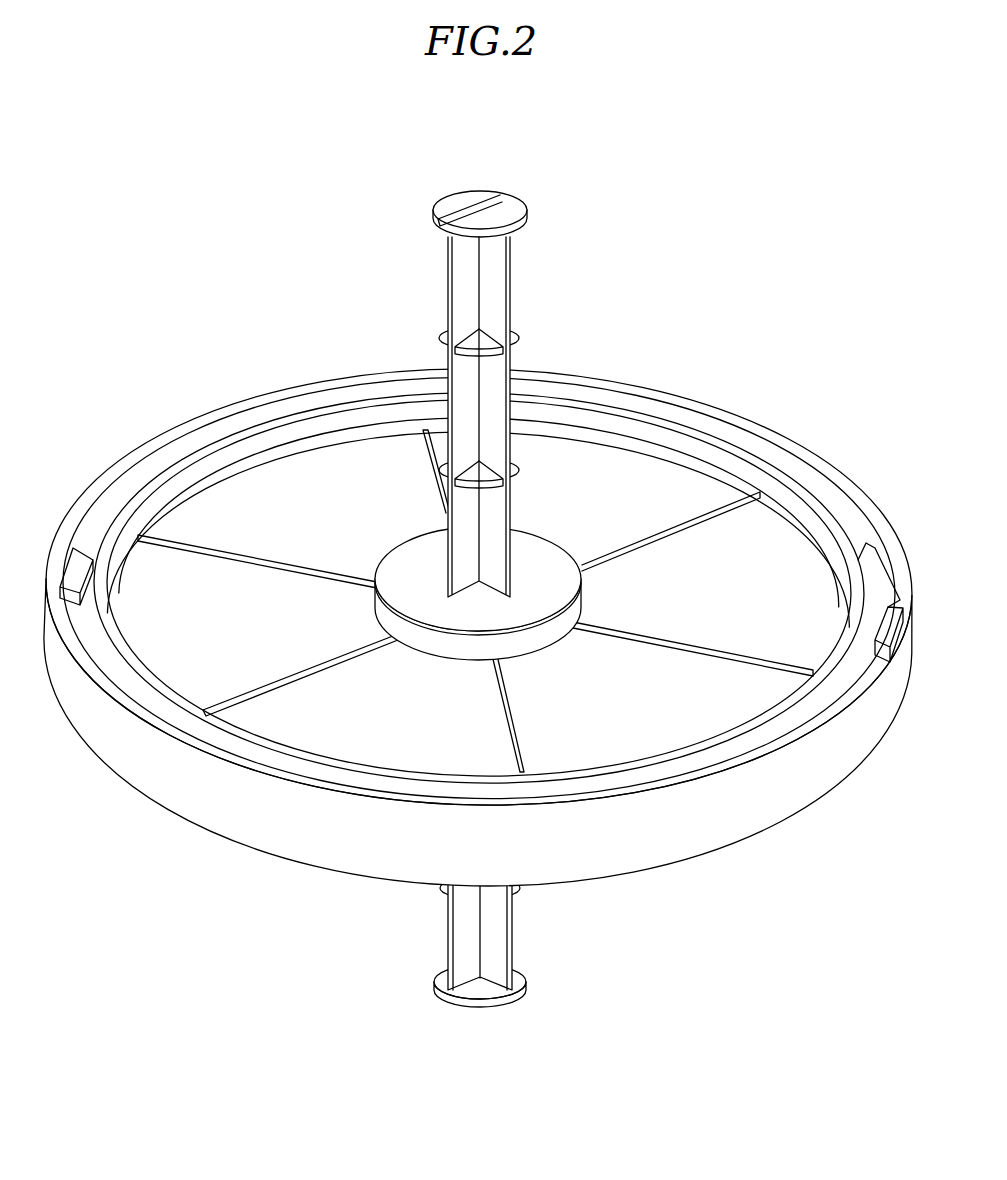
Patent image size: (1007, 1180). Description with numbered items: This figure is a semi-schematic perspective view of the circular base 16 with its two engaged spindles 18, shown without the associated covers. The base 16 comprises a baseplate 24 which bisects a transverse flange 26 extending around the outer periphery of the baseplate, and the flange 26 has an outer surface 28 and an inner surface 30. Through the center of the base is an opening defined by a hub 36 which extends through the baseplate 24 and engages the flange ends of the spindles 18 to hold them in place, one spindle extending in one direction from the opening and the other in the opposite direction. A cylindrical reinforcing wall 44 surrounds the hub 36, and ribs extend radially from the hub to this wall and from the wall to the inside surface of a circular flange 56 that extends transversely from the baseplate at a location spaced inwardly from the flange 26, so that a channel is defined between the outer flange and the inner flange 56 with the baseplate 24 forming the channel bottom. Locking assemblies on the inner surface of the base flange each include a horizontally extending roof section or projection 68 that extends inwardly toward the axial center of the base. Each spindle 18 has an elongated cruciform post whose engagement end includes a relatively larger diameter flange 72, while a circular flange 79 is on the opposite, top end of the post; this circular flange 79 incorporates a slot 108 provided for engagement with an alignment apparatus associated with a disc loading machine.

The base 16 is at (477, 642).
The spindle 18 is at (515, 298).
The baseplate 24 is at (270, 629).
The transverse flange 26 is at (698, 387).
The outer surface 28 is at (758, 793).
The inner surface 30 is at (210, 428).
The hub 36 is at (475, 601).
The cylindrical reinforcing wall 44 is at (530, 650).
The circular flange 56 is at (817, 520).
The roof section or projection 68 is at (75, 572).
The flange 72 is at (525, 550).
The circular flange 79 is at (491, 365).
The slot 108 is at (458, 205).